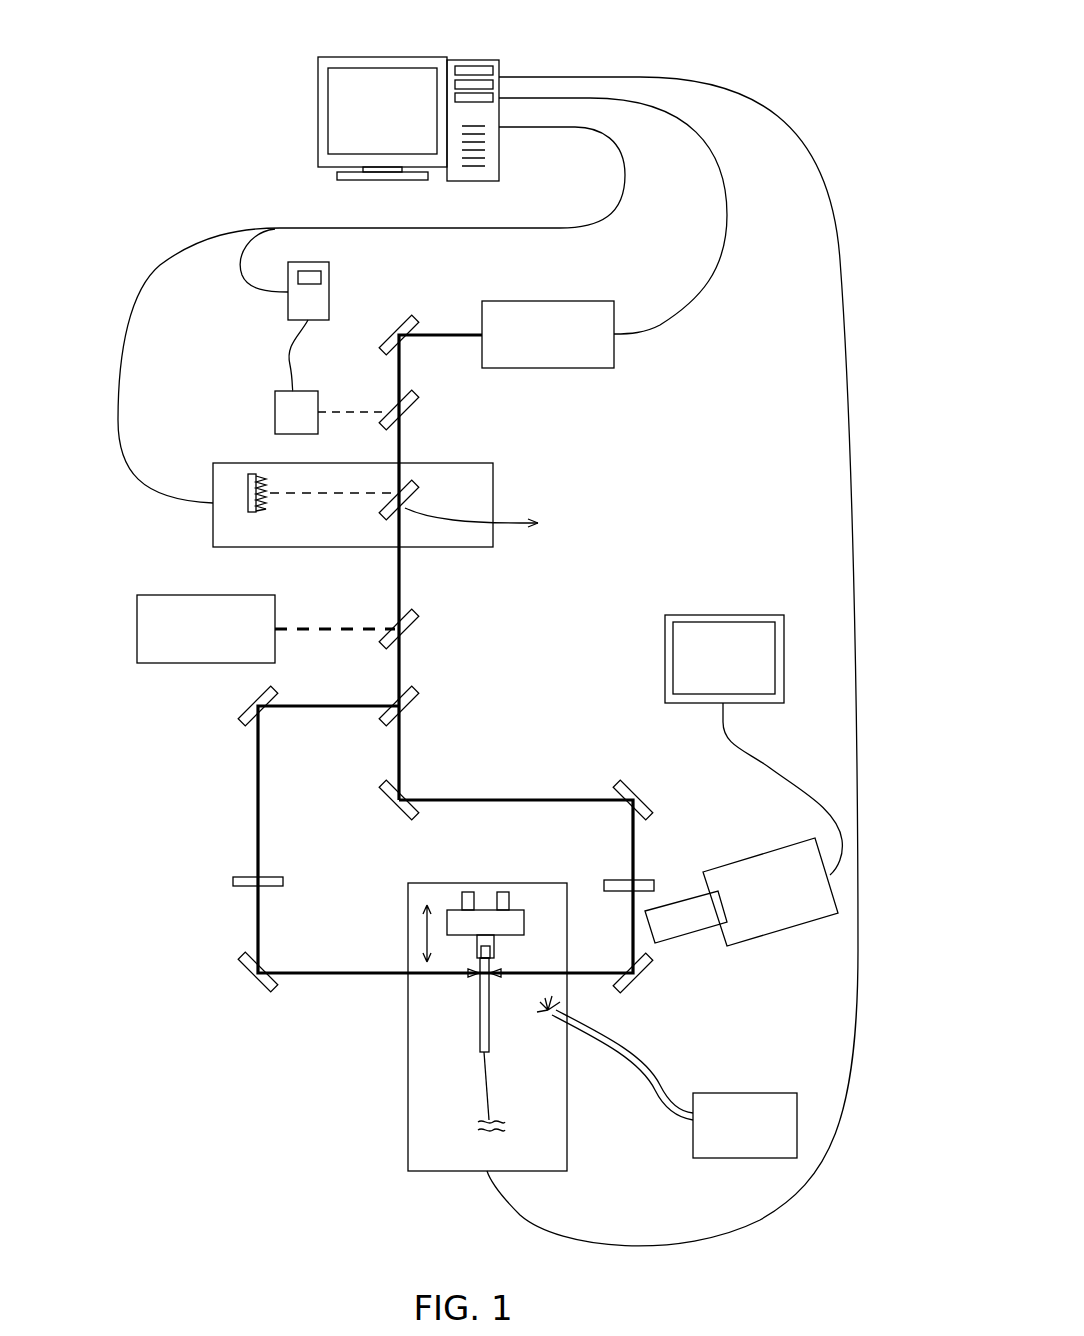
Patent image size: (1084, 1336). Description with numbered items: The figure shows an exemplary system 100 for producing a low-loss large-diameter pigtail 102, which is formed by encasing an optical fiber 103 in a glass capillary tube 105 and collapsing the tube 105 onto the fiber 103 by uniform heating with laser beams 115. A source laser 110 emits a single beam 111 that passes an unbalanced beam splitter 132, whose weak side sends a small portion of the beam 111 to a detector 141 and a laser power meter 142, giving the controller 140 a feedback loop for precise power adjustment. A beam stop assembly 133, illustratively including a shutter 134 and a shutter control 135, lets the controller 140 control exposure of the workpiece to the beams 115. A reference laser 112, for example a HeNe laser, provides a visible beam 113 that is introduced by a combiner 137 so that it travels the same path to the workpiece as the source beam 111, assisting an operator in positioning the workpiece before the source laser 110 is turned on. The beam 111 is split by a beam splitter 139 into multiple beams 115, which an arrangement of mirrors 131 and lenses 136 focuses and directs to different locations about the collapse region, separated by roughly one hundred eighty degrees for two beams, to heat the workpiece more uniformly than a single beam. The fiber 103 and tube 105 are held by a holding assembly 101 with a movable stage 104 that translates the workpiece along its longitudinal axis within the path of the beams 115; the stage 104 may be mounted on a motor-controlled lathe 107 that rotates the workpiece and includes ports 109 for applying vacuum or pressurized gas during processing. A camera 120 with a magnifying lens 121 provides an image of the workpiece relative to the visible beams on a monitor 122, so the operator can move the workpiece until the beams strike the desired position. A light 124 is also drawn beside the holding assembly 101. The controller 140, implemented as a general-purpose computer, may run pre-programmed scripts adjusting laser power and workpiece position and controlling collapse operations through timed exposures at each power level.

The system 100 is at (852, 64).
The holding assembly 101 is at (552, 1157).
The pigtail 102 is at (455, 1003).
The optical fiber 103 is at (483, 1085).
The movable stage 104 is at (495, 947).
The capillary tube 105 is at (490, 1040).
The lathe 107 is at (512, 912).
The ports 109 is at (503, 892).
The source laser 110 is at (598, 304).
The beam 111 is at (440, 335).
The reference laser 112 is at (137, 627).
The reference beam 113 is at (335, 632).
The laser beams 115 is at (330, 708).
The camera 120 is at (772, 862).
The magnifying lens 121 is at (698, 920).
The monitor 122 is at (745, 632).
The light source 124 is at (745, 1093).
The mirrors 131 is at (388, 348).
The unbalanced beam splitter 132 is at (412, 412).
The beam stop assembly 133 is at (213, 527).
The shutter 134 is at (412, 496).
The shutter control 135 is at (240, 488).
The lenses 136 is at (240, 882).
The combiner 137 is at (412, 612).
The beam splitters 139 is at (412, 712).
The controller 140 is at (475, 68).
The detector 141 is at (278, 415).
The laser power meter 142 is at (297, 305).